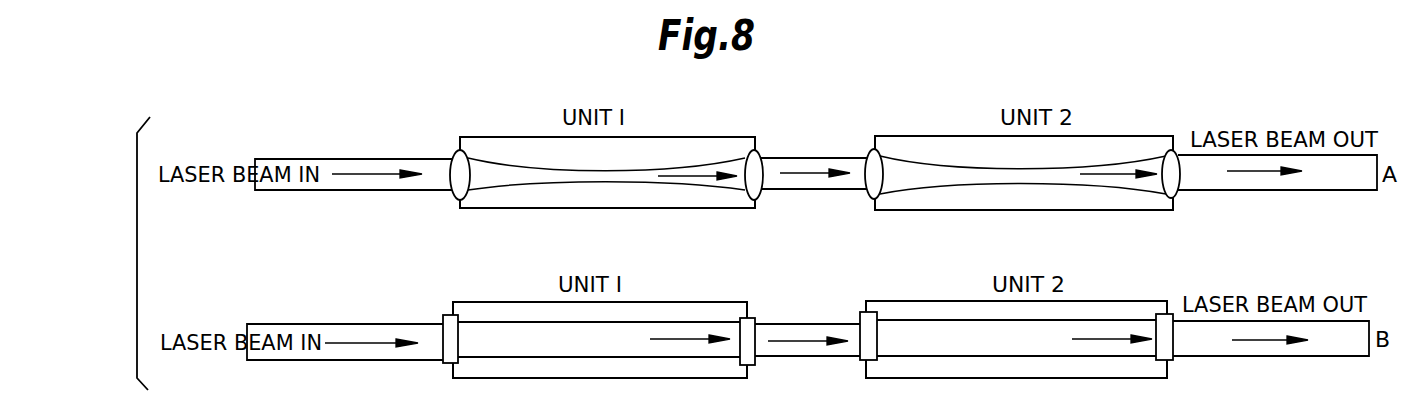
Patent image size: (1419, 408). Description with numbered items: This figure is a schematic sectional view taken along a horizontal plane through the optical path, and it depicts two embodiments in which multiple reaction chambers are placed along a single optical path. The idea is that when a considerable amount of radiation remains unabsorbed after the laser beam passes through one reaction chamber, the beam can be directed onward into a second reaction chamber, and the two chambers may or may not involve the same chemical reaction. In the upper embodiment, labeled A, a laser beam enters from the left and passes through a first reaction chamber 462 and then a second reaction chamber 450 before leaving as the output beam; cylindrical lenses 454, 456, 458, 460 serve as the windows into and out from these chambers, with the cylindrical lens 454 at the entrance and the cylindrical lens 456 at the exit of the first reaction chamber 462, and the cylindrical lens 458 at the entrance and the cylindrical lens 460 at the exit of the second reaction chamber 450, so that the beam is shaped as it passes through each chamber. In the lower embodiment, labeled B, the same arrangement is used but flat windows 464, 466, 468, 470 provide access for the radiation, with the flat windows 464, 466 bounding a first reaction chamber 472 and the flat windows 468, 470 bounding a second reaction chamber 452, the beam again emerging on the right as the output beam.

The second reaction chamber 450 is at (1126, 142).
The second reaction chamber 452 is at (1110, 305).
The cylindrical lens 454 is at (455, 152).
The cylindrical lens 456 is at (760, 152).
The cylindrical lens 458 is at (868, 150).
The cylindrical lens 460 is at (1178, 150).
The first reaction chamber 462 is at (655, 137).
The flat window 464 is at (445, 317).
The flat window 466 is at (752, 320).
The flat window 468 is at (860, 312).
The flat window 470 is at (1170, 360).
The first reaction chamber 472 is at (663, 308).